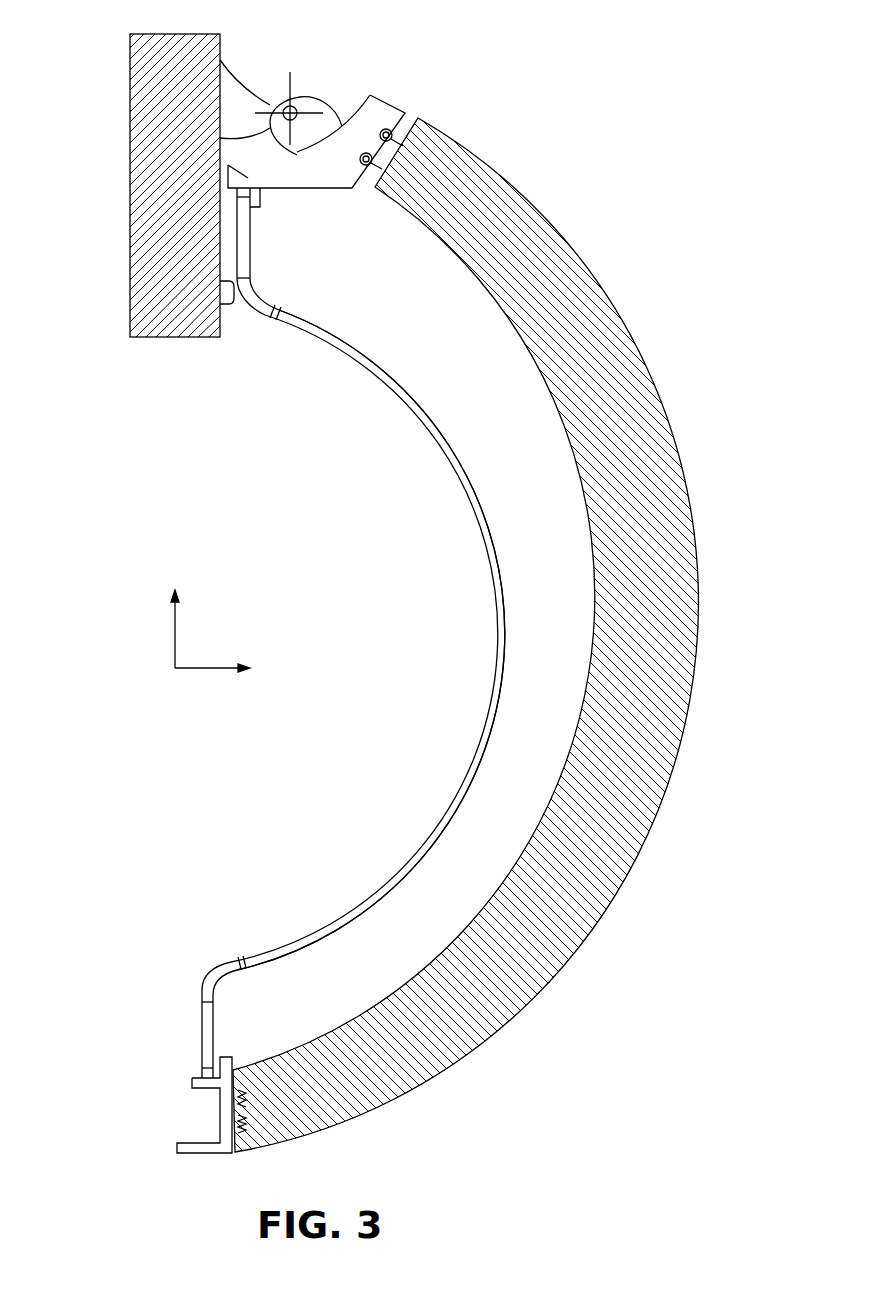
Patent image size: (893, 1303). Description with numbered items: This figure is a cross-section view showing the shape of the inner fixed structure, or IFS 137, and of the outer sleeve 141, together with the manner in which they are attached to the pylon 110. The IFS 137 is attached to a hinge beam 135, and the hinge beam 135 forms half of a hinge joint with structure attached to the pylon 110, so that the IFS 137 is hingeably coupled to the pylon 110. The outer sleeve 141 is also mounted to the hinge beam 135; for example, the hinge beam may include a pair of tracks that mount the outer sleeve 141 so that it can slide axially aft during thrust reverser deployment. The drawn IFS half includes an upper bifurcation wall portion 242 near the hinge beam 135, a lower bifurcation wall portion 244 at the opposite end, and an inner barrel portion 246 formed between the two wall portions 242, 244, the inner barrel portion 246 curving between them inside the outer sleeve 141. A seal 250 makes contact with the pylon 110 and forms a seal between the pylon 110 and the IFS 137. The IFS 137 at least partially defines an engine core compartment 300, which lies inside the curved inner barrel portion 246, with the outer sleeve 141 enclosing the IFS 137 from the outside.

The pylon 110 is at (145, 285).
The hinge beam 135 is at (297, 155).
The IFS 137 is at (494, 592).
The outer sleeve 141 is at (640, 553).
The upper bifurcation wall portion 242 is at (243, 241).
The lower bifurcation wall portion 244 is at (208, 1027).
The inner barrel portion 246 is at (397, 392).
The seal 250 is at (232, 285).
The engine core compartment 300 is at (283, 762).